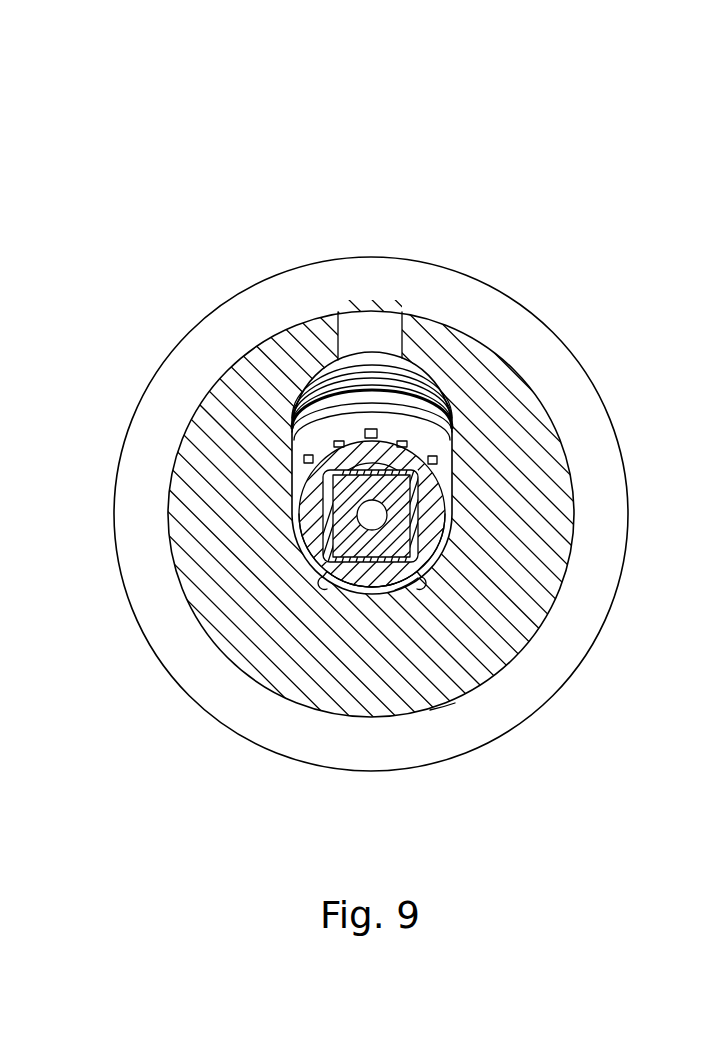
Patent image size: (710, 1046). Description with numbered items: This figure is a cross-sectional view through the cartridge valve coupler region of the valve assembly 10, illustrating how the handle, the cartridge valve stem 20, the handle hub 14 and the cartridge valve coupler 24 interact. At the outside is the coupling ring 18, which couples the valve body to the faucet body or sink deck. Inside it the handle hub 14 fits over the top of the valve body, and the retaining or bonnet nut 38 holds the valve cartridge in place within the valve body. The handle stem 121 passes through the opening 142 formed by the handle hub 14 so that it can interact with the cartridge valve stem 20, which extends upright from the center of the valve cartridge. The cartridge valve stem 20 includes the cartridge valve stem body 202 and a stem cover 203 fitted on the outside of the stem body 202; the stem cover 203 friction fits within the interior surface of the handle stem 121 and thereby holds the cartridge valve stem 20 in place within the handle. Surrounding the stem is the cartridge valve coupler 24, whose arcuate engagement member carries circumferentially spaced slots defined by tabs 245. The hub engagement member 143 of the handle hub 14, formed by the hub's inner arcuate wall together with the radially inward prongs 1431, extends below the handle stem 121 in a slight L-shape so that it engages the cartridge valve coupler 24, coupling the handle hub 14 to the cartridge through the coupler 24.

The valve assembly 10 is at (244, 192).
The handle hub 14 is at (445, 725).
The opening 142 is at (442, 713).
The hub engagement member 143 is at (302, 583).
The prongs 1431 is at (294, 592).
The coupling ring 18 is at (522, 288).
The cartridge valve stem 20 is at (311, 469).
The cartridge valve stem body 202 is at (391, 493).
The stem cover 203 is at (408, 527).
The handle stem 121 is at (422, 552).
The cartridge valve coupler 24 is at (344, 613).
The tabs 245 is at (406, 620).
The bonnet nut 38 is at (371, 405).